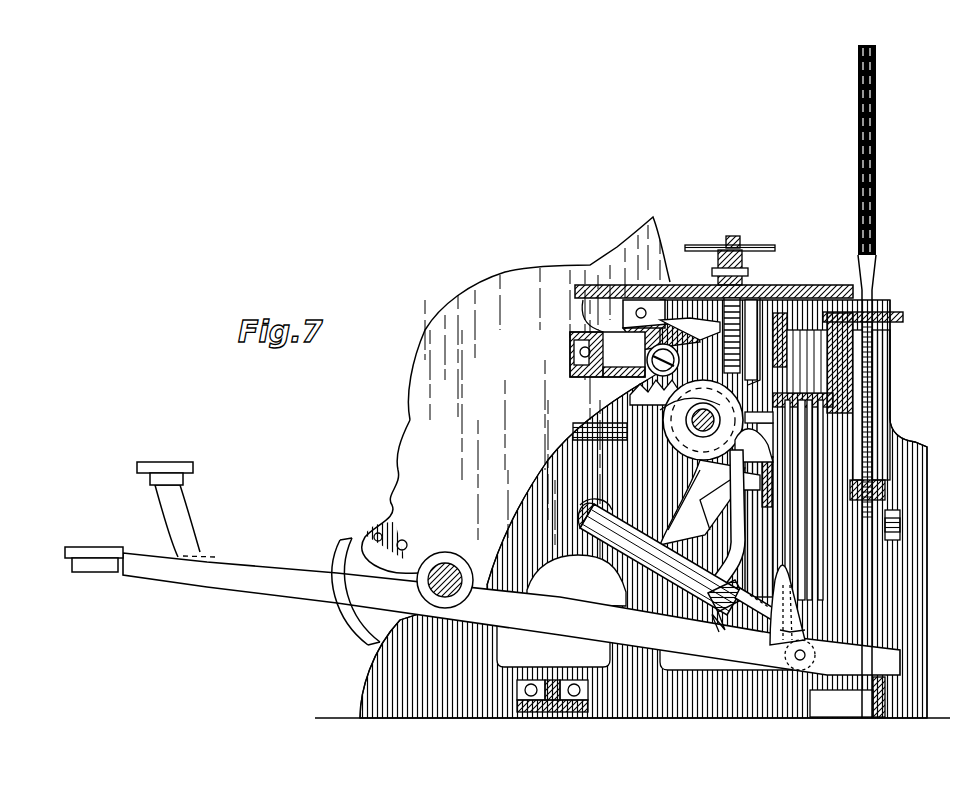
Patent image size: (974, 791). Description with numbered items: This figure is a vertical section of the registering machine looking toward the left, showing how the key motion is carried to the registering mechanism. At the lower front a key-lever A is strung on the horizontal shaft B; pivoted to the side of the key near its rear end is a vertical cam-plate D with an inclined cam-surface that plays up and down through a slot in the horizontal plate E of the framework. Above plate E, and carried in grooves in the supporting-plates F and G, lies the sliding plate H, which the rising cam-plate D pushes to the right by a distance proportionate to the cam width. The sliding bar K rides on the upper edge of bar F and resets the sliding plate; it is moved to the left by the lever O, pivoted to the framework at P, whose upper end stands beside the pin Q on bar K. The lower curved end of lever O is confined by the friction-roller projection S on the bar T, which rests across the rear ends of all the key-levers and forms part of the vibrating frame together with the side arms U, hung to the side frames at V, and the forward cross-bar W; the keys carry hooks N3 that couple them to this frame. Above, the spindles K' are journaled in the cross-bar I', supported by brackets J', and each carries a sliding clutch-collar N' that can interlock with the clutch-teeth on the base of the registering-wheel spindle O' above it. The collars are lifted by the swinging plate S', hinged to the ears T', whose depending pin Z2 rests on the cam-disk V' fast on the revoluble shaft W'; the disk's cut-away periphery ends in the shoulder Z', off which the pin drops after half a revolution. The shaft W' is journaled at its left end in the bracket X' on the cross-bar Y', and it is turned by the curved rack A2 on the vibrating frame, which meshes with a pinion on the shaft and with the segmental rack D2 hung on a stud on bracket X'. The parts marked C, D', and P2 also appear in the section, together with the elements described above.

The key-lever A is at (270, 574).
The horizontal shaft B is at (445, 570).
The vertical screw rod C is at (876, 216).
The cam-plate D is at (870, 500).
The upper bracket bar D' is at (882, 300).
The segmental rack D2 is at (652, 392).
The horizontal plate E is at (838, 413).
The supporting-plate F is at (772, 432).
The supporting-plate G is at (835, 382).
The sliding plate H is at (607, 300).
The cross-bar I' is at (763, 315).
The bracket J' is at (763, 291).
The sliding bar K is at (889, 405).
The spindle K' is at (705, 406).
The clutch-collar N' is at (690, 323).
The hook N3 is at (791, 617).
The lever O is at (717, 517).
The spindle O' is at (745, 281).
The pivot P is at (717, 482).
The flange P2 is at (700, 246).
The pin Q is at (725, 380).
The projection S is at (716, 606).
The swinging plate S' is at (641, 296).
The cross-bar T is at (750, 618).
The ears T' is at (661, 307).
The side arm U is at (659, 559).
The pivotal support V is at (551, 493).
The cam-disk V' is at (633, 404).
The cross-bar W is at (516, 400).
The revoluble shaft W' is at (701, 420).
The bracket X' is at (607, 354).
The cross-bar Y' is at (600, 412).
The shoulder Z' is at (700, 408).
The pin Z2 is at (667, 354).
The curved rack A2 is at (702, 502).